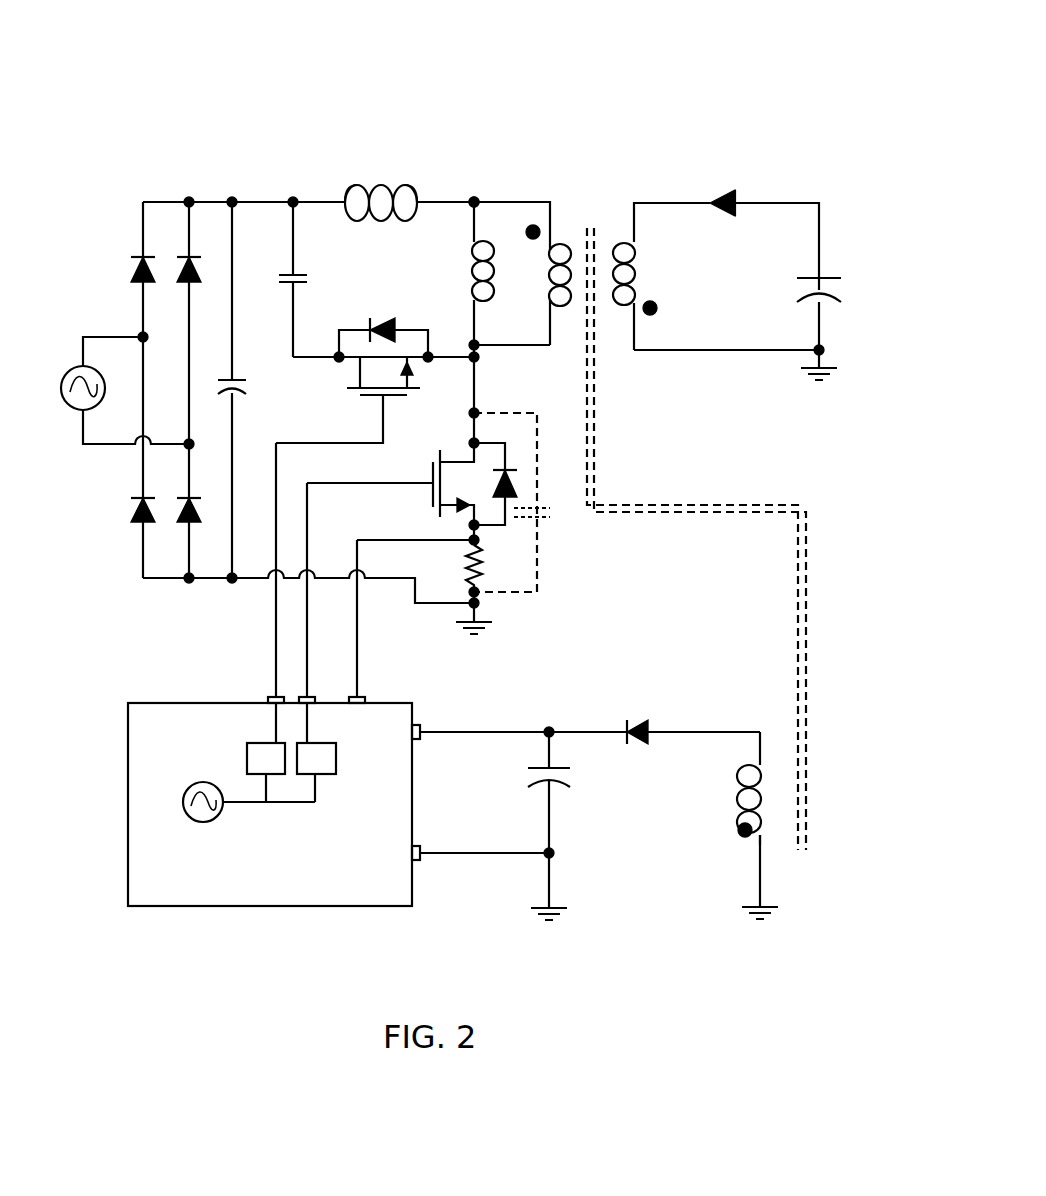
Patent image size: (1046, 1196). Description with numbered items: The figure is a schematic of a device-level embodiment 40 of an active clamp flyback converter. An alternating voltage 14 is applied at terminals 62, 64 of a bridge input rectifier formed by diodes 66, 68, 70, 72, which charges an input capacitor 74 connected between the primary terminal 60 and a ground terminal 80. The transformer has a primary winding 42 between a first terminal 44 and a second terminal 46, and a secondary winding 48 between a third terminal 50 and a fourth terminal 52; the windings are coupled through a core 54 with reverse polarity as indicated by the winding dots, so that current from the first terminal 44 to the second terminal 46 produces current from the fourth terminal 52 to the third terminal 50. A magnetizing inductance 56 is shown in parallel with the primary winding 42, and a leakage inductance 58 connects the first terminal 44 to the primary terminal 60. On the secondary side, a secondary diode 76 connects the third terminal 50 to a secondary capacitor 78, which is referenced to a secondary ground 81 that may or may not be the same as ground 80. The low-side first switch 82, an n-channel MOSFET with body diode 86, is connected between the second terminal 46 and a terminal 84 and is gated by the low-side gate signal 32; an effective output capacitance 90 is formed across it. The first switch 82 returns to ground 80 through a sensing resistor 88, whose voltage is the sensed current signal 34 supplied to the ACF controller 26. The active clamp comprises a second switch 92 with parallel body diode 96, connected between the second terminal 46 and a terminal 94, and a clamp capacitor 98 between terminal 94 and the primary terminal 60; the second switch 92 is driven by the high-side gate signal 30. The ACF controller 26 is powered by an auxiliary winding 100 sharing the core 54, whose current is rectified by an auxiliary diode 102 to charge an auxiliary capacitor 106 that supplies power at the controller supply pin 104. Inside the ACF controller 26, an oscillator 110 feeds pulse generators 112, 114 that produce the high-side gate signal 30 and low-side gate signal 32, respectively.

The flyback converter embodiment 40 is at (661, 48).
The alternating voltage 14 is at (72, 410).
The ACF controller 26 is at (270, 801).
The high-side gate signal 30 is at (274, 650).
The low-side gate signal 32 is at (307, 648).
The sensed current signal 34 is at (357, 648).
The primary winding 42 is at (543, 300).
The first terminal 44 is at (494, 202).
The second terminal 46 is at (551, 345).
The secondary winding 48 is at (640, 243).
The third terminal 50 is at (662, 203).
The fourth terminal 52 is at (633, 352).
The core 54 is at (595, 442).
The magnetizing inductance 56 is at (468, 242).
The leakage inductance 58 is at (420, 193).
The primary terminal 60 is at (259, 200).
The input terminal 62 is at (90, 336).
The input terminal 64 is at (98, 446).
The diode 66 is at (158, 240).
The diode 68 is at (204, 240).
The diode 70 is at (152, 498).
The diode 72 is at (197, 498).
The input capacitor 74 is at (222, 380).
The secondary diode 76 is at (713, 192).
The secondary capacitor 78 is at (828, 279).
The ground terminal 80 is at (478, 605).
The secondary ground 81 is at (826, 368).
The first switch 82 is at (440, 512).
The terminal 84 is at (474, 540).
The body diode 86 is at (520, 486).
The sensing resistor 88 is at (480, 566).
The effective output capacitance 90 is at (544, 512).
The second switch 92 is at (355, 398).
The terminal 94 is at (300, 358).
The body diode 96 is at (379, 320).
The clamp capacitor 98 is at (303, 284).
The auxiliary winding 100 is at (742, 775).
The auxiliary diode 102 is at (628, 722).
The Vdd supply pin 104 is at (428, 730).
The auxiliary capacitor 106 is at (562, 768).
The oscillator 110 is at (203, 824).
The pulse generator 112 is at (266, 752).
The pulse generator 114 is at (316, 752).